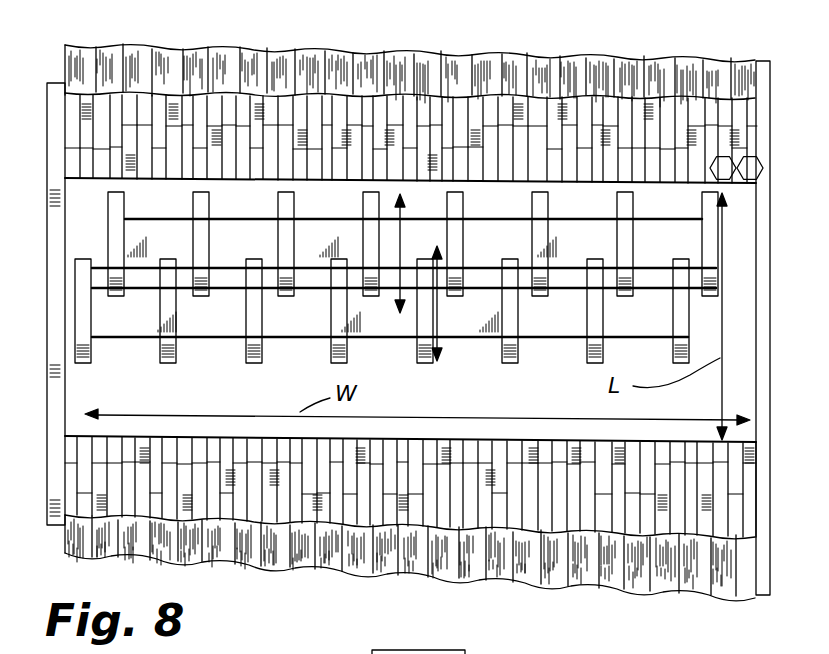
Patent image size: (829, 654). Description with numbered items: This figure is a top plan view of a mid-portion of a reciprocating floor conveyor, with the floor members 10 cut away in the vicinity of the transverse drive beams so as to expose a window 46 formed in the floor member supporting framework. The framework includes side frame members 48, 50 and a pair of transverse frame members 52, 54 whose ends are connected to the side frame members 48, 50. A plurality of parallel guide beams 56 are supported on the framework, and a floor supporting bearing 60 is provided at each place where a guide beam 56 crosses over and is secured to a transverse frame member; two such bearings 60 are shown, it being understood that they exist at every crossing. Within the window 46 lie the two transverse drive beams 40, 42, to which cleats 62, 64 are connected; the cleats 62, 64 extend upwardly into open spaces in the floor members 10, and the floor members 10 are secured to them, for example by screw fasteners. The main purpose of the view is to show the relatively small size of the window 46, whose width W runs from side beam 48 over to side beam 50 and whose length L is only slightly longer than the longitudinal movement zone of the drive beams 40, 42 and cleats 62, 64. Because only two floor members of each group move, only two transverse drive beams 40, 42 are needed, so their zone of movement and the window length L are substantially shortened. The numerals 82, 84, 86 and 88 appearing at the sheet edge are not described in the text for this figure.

The floor members 10 is at (119, 60).
The transverse drive beam 40 is at (138, 333).
The transverse drive beam 42 is at (152, 229).
The window 46 is at (738, 397).
The side frame member 48 is at (65, 272).
The side frame member 50 is at (765, 281).
The transverse frame member 52 is at (65, 162).
The transverse frame member 54 is at (70, 445).
The guide beams 56 is at (80, 545).
The floor supporting bearing 60 is at (750, 184).
The cleats 62 is at (250, 362).
The cleats 64 is at (287, 202).
The base 82 is at (318, 653).
The plate 84 is at (360, 652).
The cover 86 is at (448, 650).
The housing 88 is at (517, 648).